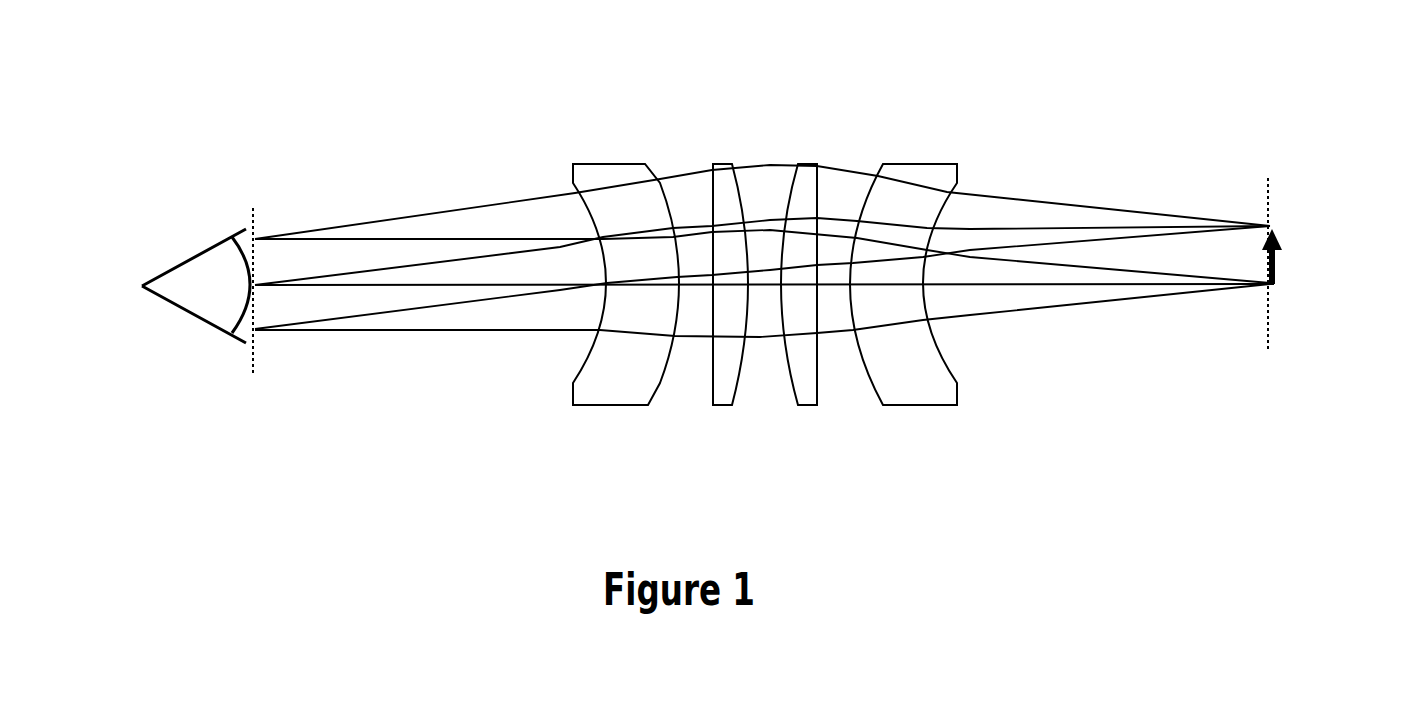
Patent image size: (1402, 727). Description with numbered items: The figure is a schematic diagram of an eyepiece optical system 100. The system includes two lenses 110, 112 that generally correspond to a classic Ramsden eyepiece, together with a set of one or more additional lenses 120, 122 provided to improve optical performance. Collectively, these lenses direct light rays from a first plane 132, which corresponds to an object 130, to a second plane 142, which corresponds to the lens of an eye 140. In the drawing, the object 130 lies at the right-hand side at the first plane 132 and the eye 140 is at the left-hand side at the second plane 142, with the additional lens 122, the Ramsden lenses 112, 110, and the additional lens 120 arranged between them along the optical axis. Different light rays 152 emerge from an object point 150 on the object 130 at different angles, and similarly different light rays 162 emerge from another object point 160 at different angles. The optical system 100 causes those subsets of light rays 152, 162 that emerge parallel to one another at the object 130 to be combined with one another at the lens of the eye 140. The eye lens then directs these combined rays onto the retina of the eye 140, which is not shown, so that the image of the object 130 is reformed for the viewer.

The eyepiece optical system 100 is at (657, 102).
The lens 110 is at (725, 408).
The lens 112 is at (802, 408).
The additional lens 120 is at (597, 408).
The additional lens 122 is at (945, 408).
The object 130 is at (1300, 225).
The first plane 132 is at (1265, 348).
The eye 140 is at (177, 235).
The second plane 142 is at (248, 383).
The object point 150 is at (1270, 287).
The light rays 152 is at (1033, 298).
The object point 160 is at (1277, 237).
The light rays 162 is at (1068, 215).